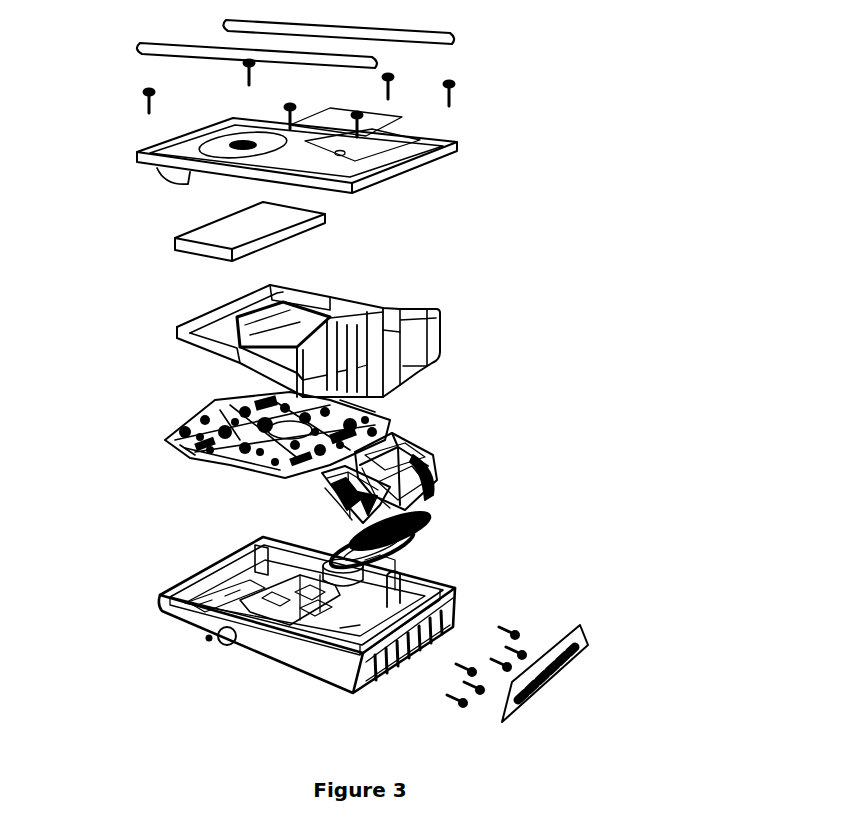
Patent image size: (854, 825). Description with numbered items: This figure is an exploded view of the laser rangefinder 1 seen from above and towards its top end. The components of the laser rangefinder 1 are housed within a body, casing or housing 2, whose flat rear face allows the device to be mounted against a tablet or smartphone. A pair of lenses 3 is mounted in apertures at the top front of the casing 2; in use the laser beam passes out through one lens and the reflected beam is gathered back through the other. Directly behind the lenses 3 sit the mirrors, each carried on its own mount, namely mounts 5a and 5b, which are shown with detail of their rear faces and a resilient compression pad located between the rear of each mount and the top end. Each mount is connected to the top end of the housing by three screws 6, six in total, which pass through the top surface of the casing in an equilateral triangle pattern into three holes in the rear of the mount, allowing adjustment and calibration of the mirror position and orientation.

The laser rangefinder 1 is at (530, 273).
The casing 2 is at (180, 617).
The lenses 3 is at (403, 554).
The mirror mount 5a is at (318, 489).
The mirror mount 5b is at (425, 452).
The screws 6 is at (522, 652).